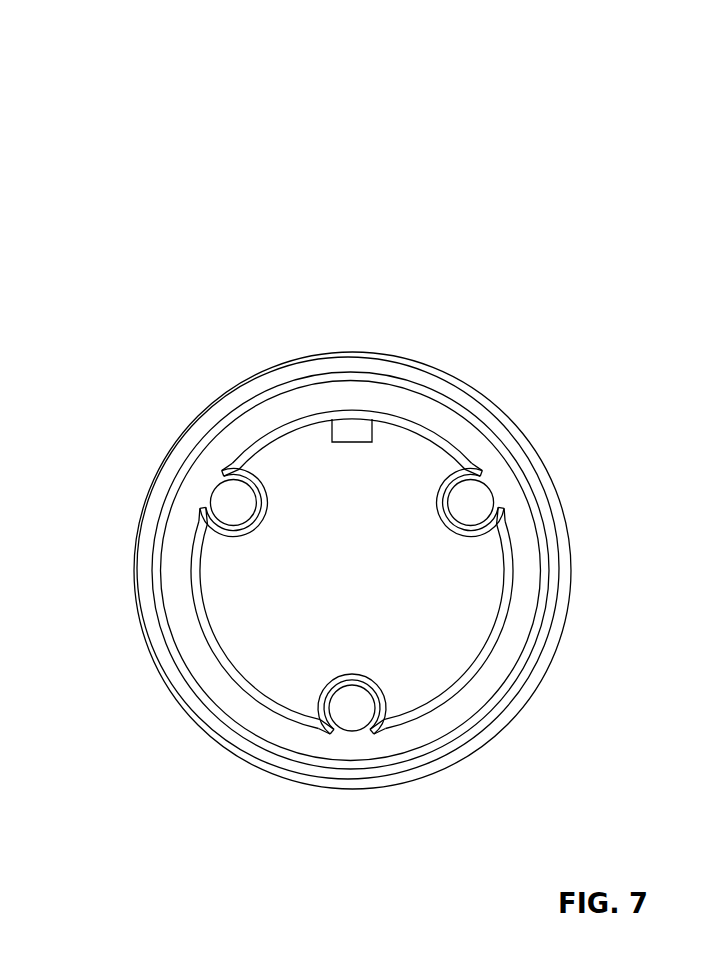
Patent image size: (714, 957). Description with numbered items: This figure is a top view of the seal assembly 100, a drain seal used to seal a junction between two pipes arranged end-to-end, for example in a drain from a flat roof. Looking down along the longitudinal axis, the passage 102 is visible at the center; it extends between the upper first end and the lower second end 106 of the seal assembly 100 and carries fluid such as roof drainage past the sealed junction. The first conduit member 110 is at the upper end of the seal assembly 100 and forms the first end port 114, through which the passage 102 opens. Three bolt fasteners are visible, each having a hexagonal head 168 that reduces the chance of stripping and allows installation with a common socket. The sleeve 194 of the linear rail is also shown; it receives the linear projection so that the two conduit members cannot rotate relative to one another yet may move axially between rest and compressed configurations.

The seal assembly 100 is at (597, 75).
The passage 102 is at (293, 490).
The second end 106 is at (200, 330).
The first conduit member 110 is at (532, 575).
The first end port 114 is at (200, 577).
The hexagonal head 168 is at (472, 510).
The sleeve 194 is at (353, 423).